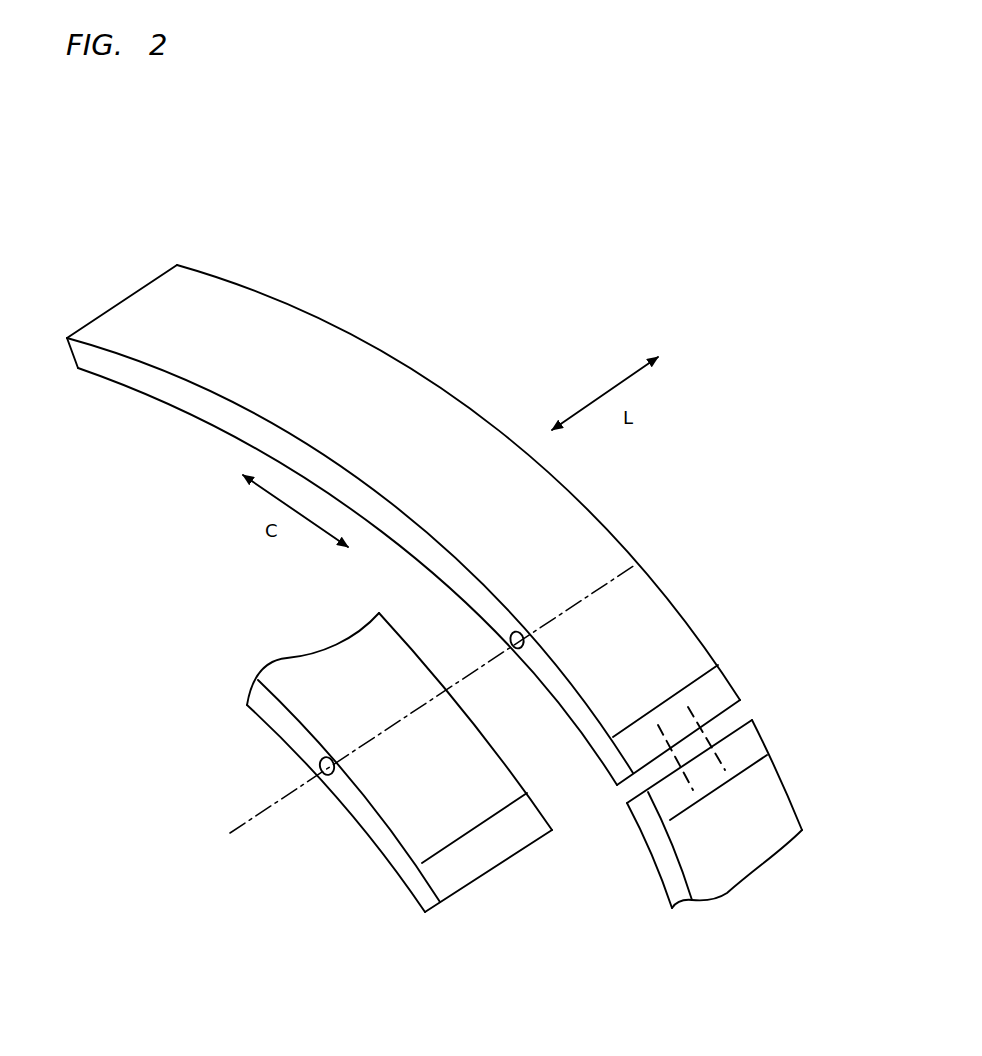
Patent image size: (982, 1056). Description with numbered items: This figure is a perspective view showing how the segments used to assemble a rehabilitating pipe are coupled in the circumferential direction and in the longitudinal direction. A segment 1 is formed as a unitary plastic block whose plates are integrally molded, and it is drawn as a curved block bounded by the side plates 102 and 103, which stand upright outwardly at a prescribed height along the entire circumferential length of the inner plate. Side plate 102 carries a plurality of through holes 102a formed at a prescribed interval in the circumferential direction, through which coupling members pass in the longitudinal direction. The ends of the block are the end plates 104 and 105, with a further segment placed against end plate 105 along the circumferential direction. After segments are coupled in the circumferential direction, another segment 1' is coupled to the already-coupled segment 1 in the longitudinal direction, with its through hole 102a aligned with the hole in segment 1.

The segment 1 is at (489, 598).
The segment 1' is at (399, 773).
The side plate 102 is at (237, 420).
The through hole 102a is at (522, 649).
The side plate 103 is at (365, 338).
The end plate 104 is at (110, 307).
The end plate 105 is at (733, 708).